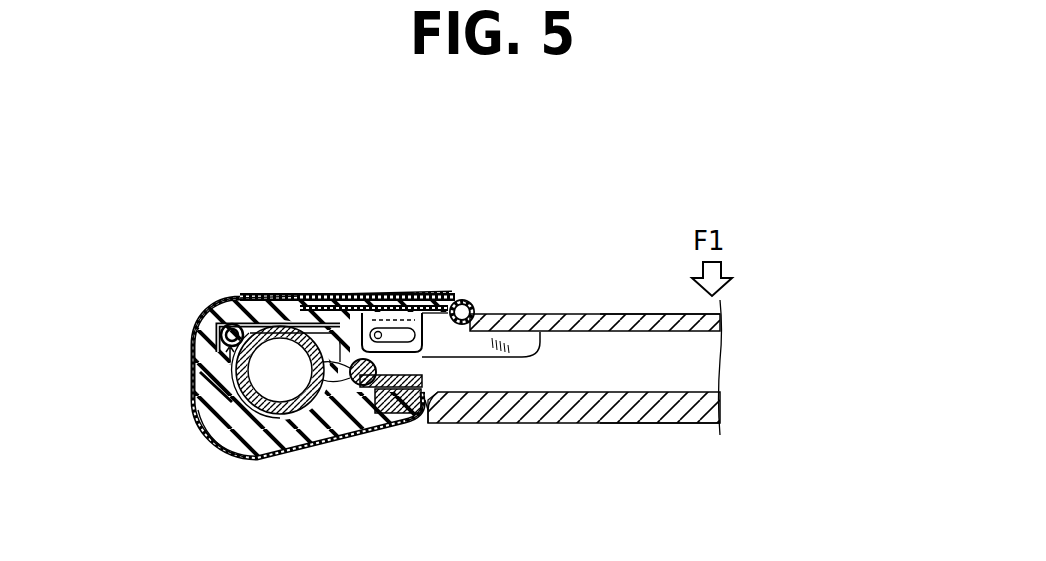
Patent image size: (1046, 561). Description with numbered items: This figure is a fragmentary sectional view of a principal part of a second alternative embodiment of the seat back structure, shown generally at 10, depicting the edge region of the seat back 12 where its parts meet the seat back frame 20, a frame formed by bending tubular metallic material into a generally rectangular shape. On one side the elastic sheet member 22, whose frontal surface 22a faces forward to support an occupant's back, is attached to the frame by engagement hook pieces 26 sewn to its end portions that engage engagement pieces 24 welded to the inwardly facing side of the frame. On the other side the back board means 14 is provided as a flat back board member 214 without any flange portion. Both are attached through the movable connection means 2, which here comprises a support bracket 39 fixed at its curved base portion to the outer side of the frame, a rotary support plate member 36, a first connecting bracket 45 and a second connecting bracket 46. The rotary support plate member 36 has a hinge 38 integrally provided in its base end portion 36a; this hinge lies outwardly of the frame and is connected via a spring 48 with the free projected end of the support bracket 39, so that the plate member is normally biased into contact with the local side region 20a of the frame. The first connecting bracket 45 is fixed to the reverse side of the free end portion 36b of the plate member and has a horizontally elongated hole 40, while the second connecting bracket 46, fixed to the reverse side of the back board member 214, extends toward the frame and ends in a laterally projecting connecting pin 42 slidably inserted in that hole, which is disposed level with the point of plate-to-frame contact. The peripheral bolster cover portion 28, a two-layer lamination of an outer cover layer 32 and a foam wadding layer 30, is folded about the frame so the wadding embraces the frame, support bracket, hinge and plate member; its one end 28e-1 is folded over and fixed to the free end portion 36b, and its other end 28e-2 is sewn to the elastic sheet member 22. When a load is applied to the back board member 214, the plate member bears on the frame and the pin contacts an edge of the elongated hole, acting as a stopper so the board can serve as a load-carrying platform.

The movable connection means 2 is at (424, 455).
The vehicle door 10 is at (604, 200).
The seat back 12 is at (156, 200).
The back board means 14 is at (571, 290).
The seat back frame 20 is at (328, 452).
The local side region of seat back frame 20a is at (265, 290).
The elastic sheet member 22 is at (608, 413).
The frontal surface of elastic sheet member 22a is at (673, 420).
The engagement piece 24 is at (440, 412).
The engagement hook piece 26 is at (295, 292).
The peripheral bolster cover portion 28 is at (290, 466).
The one end of peripheral bolster cover portion 28e-1 is at (473, 303).
The another end of peripheral bolster cover portion 28e-2 is at (417, 417).
The foam wadding layer 30 is at (385, 432).
The outer cover layer 32 is at (233, 452).
The rotary support plate member 36 is at (348, 292).
The base end portion of rotary support plate member 36a is at (213, 292).
The free end portion of rotary support plate member 36b is at (387, 293).
The hinge 38 is at (200, 387).
The support bracket 39 is at (210, 438).
The elongated hole 40 is at (400, 377).
The connecting pin 42 is at (400, 312).
The first connecting bracket 45 is at (427, 295).
The second connecting bracket 46 is at (518, 332).
The spring 48 is at (197, 350).
The flat back board member 214 is at (625, 314).